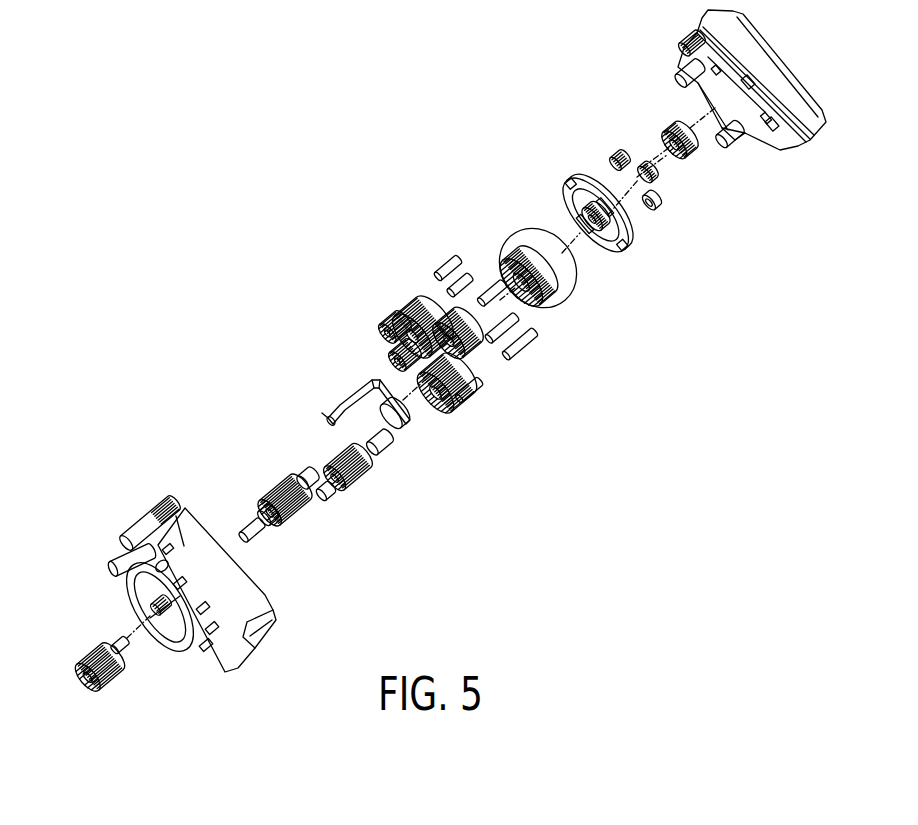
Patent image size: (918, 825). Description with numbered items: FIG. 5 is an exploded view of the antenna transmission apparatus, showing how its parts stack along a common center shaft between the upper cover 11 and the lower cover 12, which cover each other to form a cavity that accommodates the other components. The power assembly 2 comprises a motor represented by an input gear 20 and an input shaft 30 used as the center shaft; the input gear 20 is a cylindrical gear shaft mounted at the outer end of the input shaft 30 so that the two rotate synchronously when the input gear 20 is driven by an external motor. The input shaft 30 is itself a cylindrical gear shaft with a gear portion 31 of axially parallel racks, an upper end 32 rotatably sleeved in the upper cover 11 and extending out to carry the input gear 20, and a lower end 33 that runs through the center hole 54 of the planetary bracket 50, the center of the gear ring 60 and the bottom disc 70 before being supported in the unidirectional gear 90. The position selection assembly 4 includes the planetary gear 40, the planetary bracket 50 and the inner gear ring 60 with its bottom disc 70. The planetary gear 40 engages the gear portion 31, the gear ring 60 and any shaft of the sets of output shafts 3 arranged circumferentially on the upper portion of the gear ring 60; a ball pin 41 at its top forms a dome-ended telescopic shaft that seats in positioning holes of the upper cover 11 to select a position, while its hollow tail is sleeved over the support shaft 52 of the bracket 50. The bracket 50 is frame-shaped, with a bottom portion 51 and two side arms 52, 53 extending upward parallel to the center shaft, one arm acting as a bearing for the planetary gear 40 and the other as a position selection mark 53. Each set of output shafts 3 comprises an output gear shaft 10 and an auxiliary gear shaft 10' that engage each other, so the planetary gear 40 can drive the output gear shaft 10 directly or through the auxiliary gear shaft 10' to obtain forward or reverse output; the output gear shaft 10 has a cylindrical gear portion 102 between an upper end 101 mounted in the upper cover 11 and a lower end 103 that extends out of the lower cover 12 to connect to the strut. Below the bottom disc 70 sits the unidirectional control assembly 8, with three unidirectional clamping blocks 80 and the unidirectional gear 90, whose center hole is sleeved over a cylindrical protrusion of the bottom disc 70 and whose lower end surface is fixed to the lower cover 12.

The power assembly 2 is at (178, 386).
The set of output shafts 3 is at (265, 272).
The position selection assembly 4 is at (432, 530).
The unidirectional control assembly 8 is at (745, 193).
The output gear shaft 10 is at (401, 307).
The auxiliary gear shaft 10' is at (344, 325).
The upper cover 11 is at (255, 608).
The lower cover 12 is at (702, 20).
The input gear 20 is at (83, 668).
The input shaft 30 is at (235, 415).
The cylindrical gear portion 31 is at (267, 493).
The upper end 32 is at (235, 517).
The lower end 33 is at (300, 473).
The planetary gear 40 is at (365, 478).
The ball pin 41 is at (332, 497).
The planetary bracket 50 is at (407, 423).
The bottom portion 51 is at (358, 383).
The side arm (support shaft) 52 is at (380, 443).
The side arm (position selection mark) 53 is at (322, 413).
The center hole 54 is at (395, 392).
The inner gear ring 60 is at (578, 282).
The bottom disc 70 is at (620, 242).
The unidirectional clamping block 80 is at (615, 158).
The unidirectional gear 90 is at (673, 147).
The upper end 101 is at (392, 320).
The cylindrical gear portion 102 is at (405, 315).
The lower end 103 is at (447, 283).